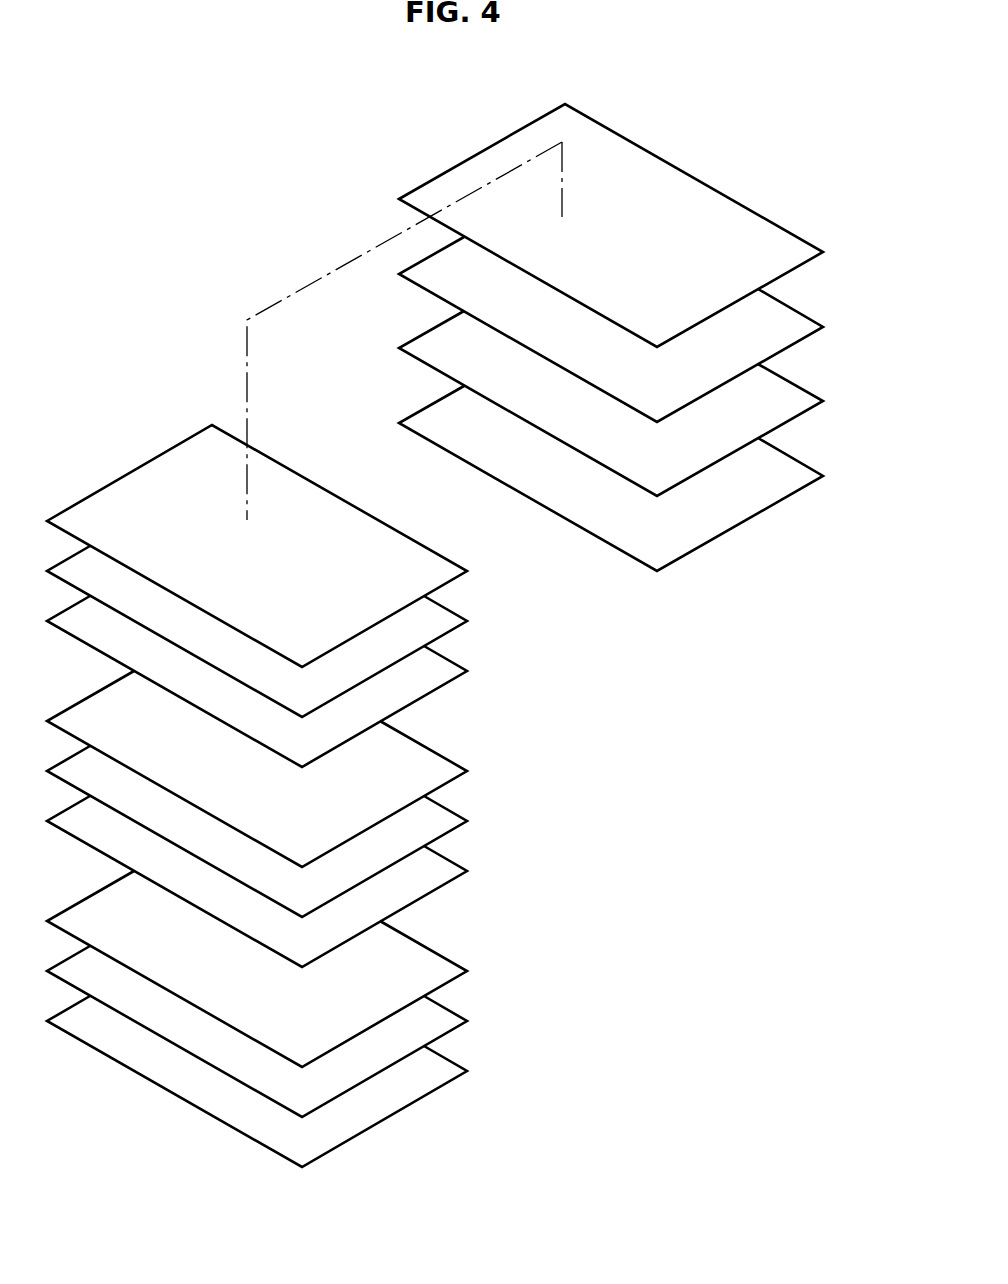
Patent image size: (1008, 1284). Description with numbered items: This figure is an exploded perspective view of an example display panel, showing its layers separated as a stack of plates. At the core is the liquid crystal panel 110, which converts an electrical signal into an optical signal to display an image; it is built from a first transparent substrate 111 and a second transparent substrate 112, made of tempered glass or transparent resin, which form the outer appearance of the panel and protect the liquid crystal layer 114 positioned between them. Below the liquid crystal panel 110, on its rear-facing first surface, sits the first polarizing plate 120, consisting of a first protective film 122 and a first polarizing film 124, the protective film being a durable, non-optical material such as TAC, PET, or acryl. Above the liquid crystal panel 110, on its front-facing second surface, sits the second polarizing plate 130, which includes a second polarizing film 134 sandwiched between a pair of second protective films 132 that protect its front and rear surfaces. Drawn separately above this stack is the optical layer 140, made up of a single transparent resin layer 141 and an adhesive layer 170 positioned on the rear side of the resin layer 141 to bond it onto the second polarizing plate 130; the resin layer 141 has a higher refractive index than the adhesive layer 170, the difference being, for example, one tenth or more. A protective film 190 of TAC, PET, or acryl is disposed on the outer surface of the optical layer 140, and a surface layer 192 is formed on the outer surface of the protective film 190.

The liquid crystal panel 110 is at (326, 819).
The first transparent substrate 111 is at (293, 881).
The second transparent substrate 112 is at (467, 771).
The liquid crystal layer 114 is at (467, 821).
The first polarizing plate 120 is at (326, 1019).
The first protective film 122 is at (467, 971).
The first polarizing film 124 is at (467, 1021).
The second polarizing plate 130 is at (326, 596).
The second protective film 132 is at (467, 571).
The second polarizing film 134 is at (467, 621).
The optical layer 140 is at (560, 312).
The resin layer 141 is at (787, 313).
The adhesive layer 170 is at (812, 245).
The protective film 190 is at (818, 393).
The surface layer 192 is at (810, 468).